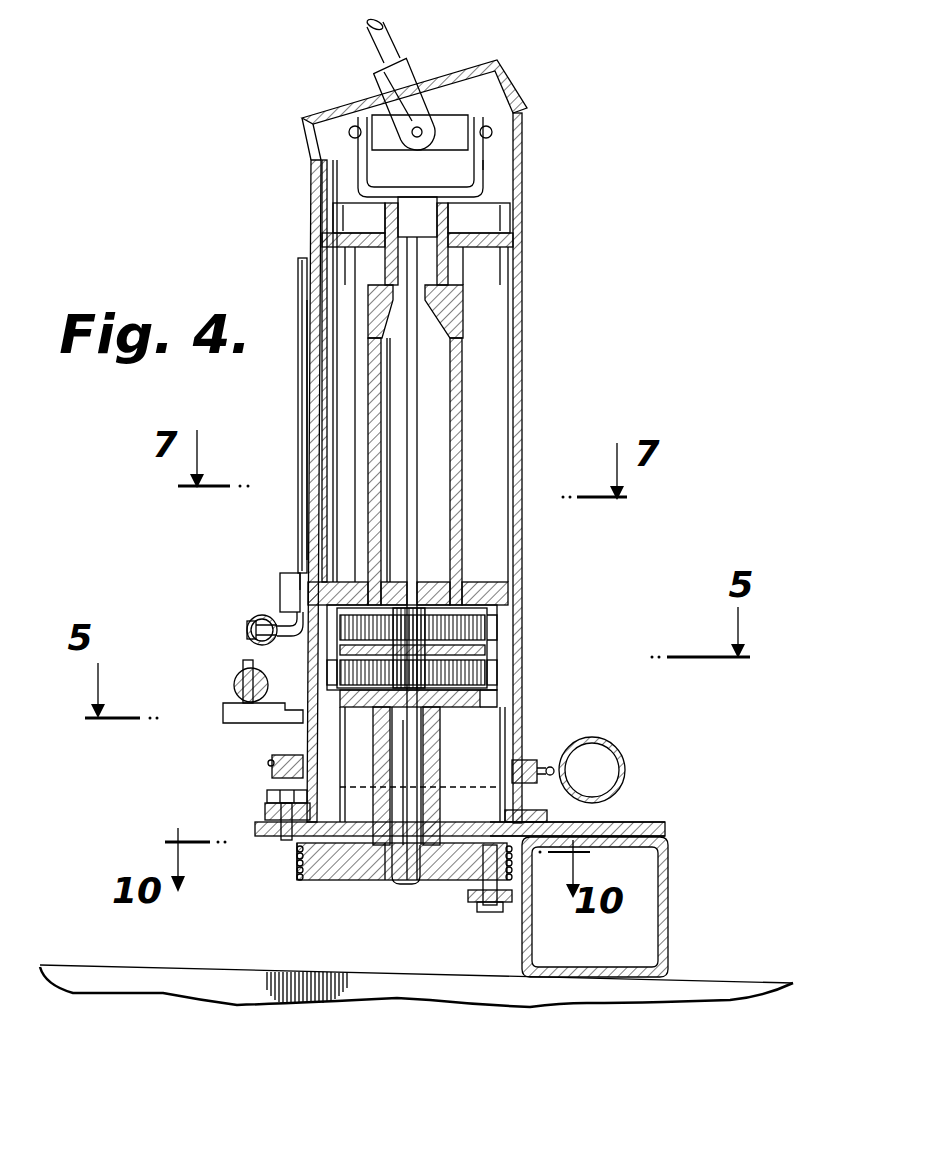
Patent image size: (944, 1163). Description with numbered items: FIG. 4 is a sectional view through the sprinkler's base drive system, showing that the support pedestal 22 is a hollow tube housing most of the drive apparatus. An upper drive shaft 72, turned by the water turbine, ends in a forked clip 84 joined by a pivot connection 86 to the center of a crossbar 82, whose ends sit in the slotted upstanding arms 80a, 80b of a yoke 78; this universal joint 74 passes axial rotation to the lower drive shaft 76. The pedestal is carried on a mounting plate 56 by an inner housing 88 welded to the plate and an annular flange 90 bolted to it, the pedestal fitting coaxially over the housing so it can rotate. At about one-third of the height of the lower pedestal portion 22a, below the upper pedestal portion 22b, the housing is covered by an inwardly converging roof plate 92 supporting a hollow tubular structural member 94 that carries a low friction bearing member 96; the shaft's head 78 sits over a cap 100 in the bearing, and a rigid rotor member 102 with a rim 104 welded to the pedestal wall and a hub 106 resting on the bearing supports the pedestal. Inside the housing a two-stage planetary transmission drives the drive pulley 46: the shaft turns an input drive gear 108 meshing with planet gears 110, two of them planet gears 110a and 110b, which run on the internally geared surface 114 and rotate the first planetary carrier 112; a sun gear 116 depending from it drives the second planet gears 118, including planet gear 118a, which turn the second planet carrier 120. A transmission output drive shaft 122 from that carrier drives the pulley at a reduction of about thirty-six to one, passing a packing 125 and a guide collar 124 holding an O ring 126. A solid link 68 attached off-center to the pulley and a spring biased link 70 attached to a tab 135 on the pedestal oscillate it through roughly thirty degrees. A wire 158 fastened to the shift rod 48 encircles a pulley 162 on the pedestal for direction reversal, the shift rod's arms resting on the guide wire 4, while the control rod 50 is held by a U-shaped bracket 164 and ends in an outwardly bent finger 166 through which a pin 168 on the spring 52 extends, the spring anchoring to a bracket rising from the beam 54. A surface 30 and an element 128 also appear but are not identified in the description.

The guide wire 4 is at (297, 862).
The support pedestal 22 is at (532, 388).
The lower pedestal portion 22a is at (522, 337).
The housing top wall 22b is at (500, 62).
The ground surface 30 is at (134, 978).
The drive pulley 46 is at (325, 880).
The shift rod 48 is at (600, 742).
The control rod 50 is at (300, 358).
The spring 52 is at (247, 630).
The beam 54 is at (668, 905).
The mounting plate 56 is at (665, 828).
The link 68 is at (473, 912).
The spring biased link 70 is at (236, 685).
The upper drive shaft 72 is at (365, 30).
The universal joint 74 is at (499, 146).
The lower drive shaft 76 is at (418, 440).
The yoke 78 is at (378, 177).
The upstanding arm 80a is at (306, 125).
The upstanding arm 80b is at (477, 173).
The crossbar 82 is at (458, 120).
The forked clip 84 is at (375, 68).
The pivot connection 86 is at (419, 127).
The inner housing 88 is at (500, 748).
The annular flange 90 is at (547, 815).
The roof plate 92 is at (470, 580).
The hollow tubular structural member 94 is at (375, 442).
The low friction bearing member 96 is at (463, 288).
The cap 100 is at (508, 265).
The rigid rotor member 102 is at (300, 268).
The rim 104 is at (318, 213).
The hub 106 is at (387, 278).
The input drive gear 108 is at (465, 582).
The planet gears 110 is at (465, 614).
The planet gear 110a is at (322, 611).
The planet gear 110b is at (485, 637).
The first planetary carrier 112 is at (487, 650).
The internally geared surface 114 is at (497, 710).
The sun gear 116 is at (385, 718).
The second planet gears 118 is at (499, 675).
The planet gear 118a is at (330, 672).
The second planet carrier 120 is at (475, 715).
The transmission output drive shaft 122 is at (403, 886).
The guide collar 124 is at (440, 782).
The packing 125 is at (392, 782).
The O ring 126 is at (385, 878).
The bolt 128 is at (243, 665).
The tab 135 is at (230, 718).
The wire 158 is at (268, 763).
The pulley 162 is at (278, 792).
The U-shaped bracket 164 is at (290, 573).
The outwardly bent finger 166 is at (292, 636).
The pin 168 is at (252, 620).